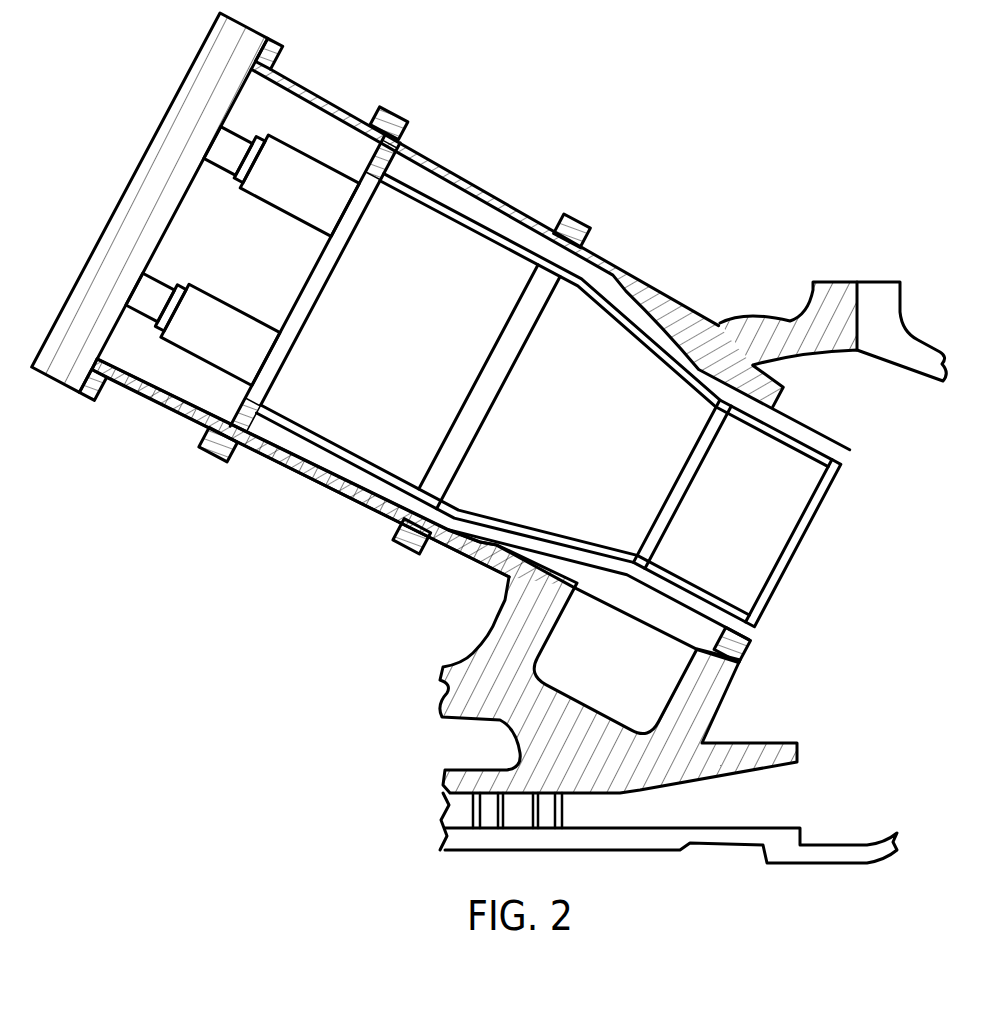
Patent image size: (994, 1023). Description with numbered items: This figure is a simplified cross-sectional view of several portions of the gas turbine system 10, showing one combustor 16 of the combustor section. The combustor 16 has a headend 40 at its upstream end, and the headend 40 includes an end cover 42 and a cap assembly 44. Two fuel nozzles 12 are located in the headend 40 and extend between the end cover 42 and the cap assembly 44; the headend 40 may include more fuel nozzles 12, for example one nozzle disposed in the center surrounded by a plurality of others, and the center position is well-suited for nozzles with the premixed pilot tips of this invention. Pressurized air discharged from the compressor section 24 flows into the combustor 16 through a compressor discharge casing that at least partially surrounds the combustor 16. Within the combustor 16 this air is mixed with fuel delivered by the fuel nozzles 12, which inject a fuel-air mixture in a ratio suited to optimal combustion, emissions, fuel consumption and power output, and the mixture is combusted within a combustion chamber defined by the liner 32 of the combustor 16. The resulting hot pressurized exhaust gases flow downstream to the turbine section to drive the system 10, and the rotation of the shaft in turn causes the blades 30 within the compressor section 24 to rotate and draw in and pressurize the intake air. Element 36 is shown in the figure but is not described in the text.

The gas turbine system 10 is at (668, 120).
The fuel nozzles 12 is at (266, 176).
The combustor 16 is at (508, 202).
The compressor section 24 is at (413, 802).
The blades 30 is at (472, 814).
The liner 32 is at (313, 418).
The base plate 36 is at (770, 803).
The headend 40 is at (160, 433).
The end cover 42 is at (145, 156).
The cap assembly 44 is at (375, 173).